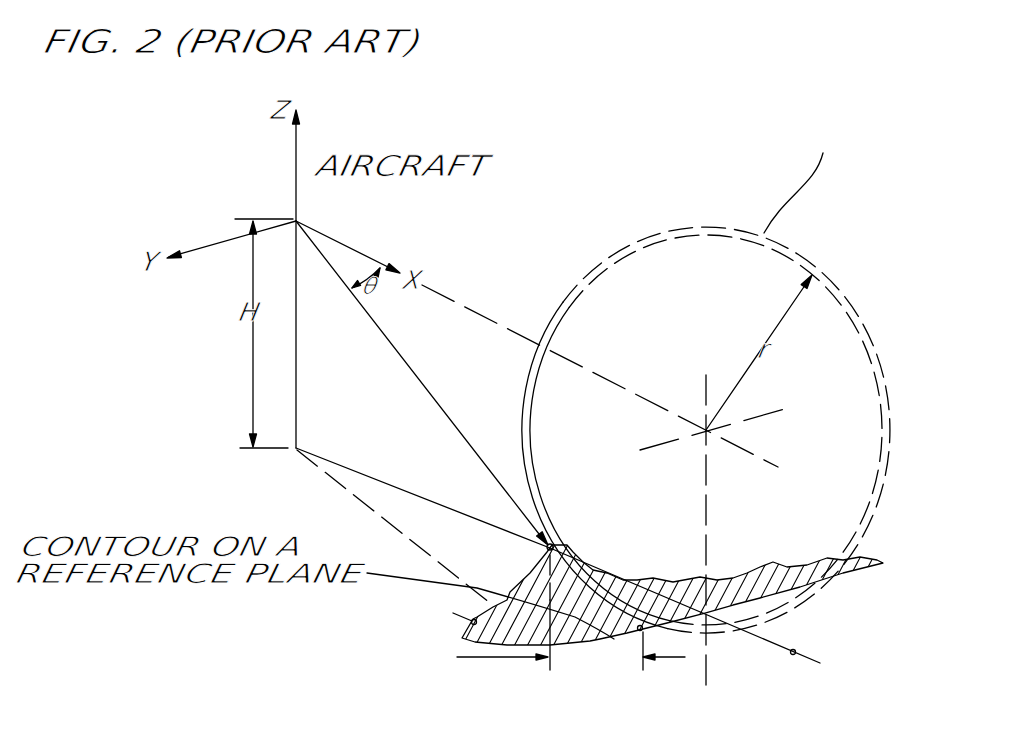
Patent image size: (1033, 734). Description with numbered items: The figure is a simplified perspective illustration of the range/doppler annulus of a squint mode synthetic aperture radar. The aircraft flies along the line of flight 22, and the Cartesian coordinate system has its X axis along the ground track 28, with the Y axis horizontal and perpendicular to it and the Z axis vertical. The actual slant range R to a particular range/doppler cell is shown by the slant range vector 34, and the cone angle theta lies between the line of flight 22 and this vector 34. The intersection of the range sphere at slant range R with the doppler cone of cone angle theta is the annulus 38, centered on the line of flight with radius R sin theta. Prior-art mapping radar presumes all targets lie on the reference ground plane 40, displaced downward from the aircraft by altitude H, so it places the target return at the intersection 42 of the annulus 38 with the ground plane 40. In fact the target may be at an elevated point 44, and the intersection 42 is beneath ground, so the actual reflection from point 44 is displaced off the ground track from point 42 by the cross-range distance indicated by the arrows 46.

The line of flight 22 is at (563, 247).
The slant range vector 34 is at (457, 380).
The annulus 38 is at (528, 415).
The point 44 is at (553, 545).
The reference ground plane 40 is at (879, 566).
The ground track 28 is at (796, 652).
The intersection 42 is at (640, 629).
The arrows 46 is at (514, 657).